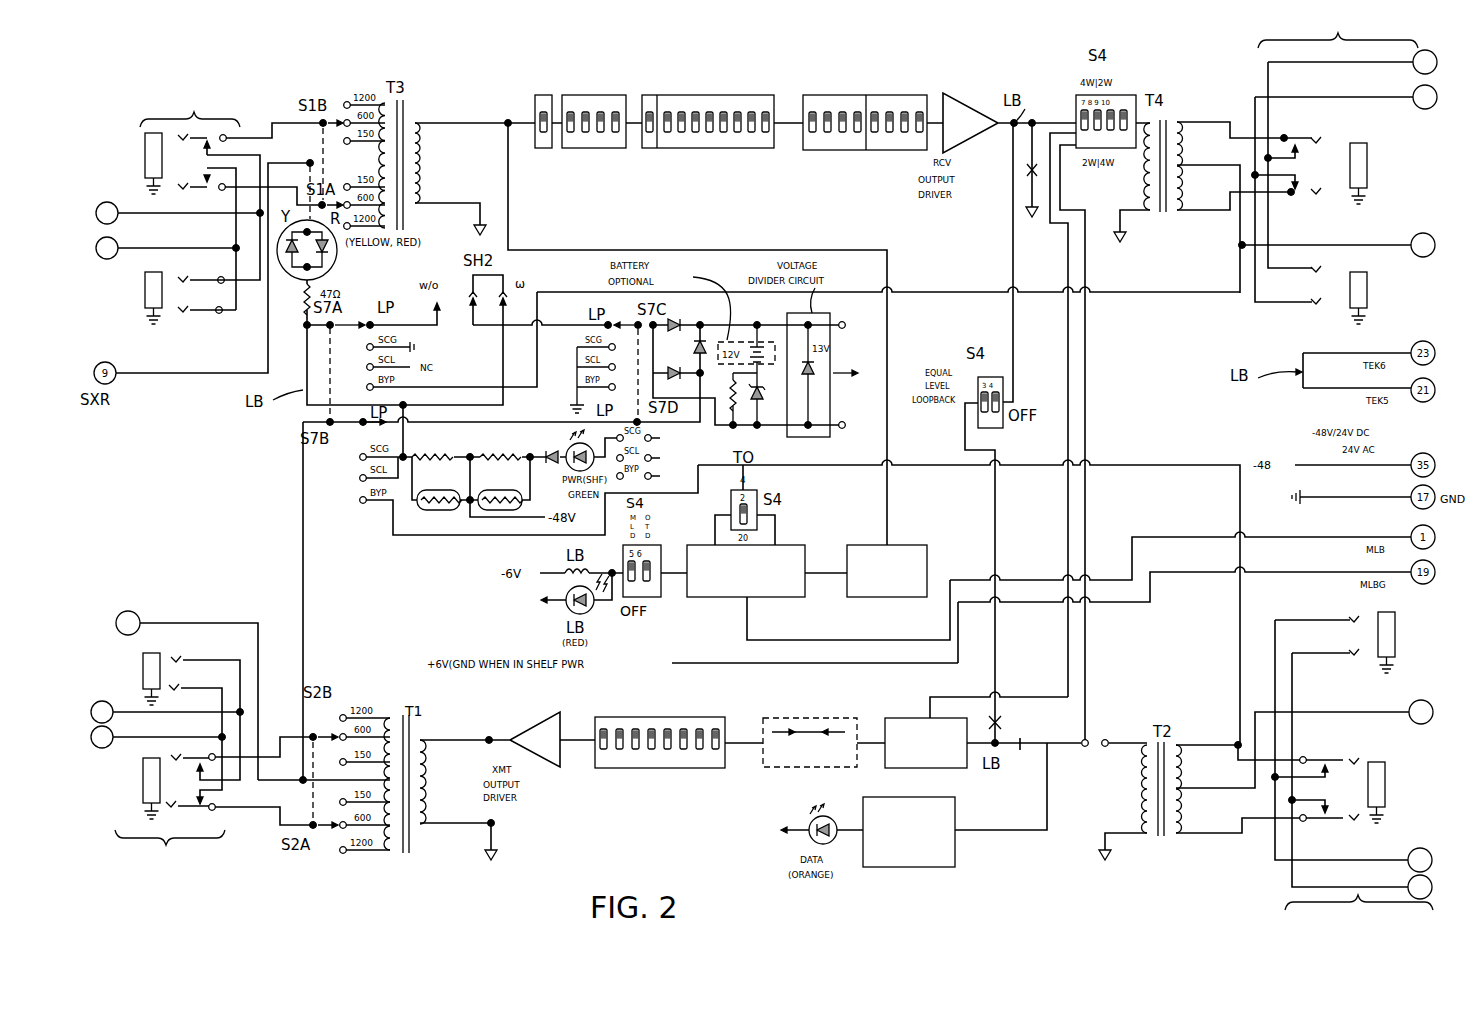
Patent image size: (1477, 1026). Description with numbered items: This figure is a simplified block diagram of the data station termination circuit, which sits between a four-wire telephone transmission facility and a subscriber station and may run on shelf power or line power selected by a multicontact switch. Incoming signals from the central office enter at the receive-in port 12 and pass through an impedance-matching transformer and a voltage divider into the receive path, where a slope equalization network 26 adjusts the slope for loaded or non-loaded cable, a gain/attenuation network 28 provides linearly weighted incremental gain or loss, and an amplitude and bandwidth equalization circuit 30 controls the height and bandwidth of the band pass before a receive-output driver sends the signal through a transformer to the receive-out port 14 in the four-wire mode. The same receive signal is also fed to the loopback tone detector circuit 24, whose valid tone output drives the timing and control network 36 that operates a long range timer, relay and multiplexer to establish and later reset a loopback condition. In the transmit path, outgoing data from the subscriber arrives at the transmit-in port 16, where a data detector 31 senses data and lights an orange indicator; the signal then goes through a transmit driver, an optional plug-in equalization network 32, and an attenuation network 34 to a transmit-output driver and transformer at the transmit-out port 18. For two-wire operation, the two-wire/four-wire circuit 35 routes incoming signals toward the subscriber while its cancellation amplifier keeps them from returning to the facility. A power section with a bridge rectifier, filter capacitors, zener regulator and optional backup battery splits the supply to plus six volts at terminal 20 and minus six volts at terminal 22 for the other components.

The receive-in port 12 is at (98, 234).
The receive-out port 14 is at (1444, 82).
The transmit-in port 16 is at (1435, 875).
The transmit-out port 18 is at (93, 737).
The +6 volt terminal 20 is at (846, 327).
The −6 volt terminal 22 is at (846, 428).
The loopback tone detector circuit 24 is at (910, 545).
The slope equalization network 26 is at (610, 40).
The gain/attenuation network 28 is at (775, 40).
The amplitude and bandwidth equalization circuit 30 is at (922, 40).
The data detector 31 is at (935, 867).
The optional plug-in equalization network 32 is at (793, 767).
The attenuation network 34 is at (745, 823).
The 2W/4W circuit 35 is at (950, 768).
The timing and control network 36 is at (767, 597).